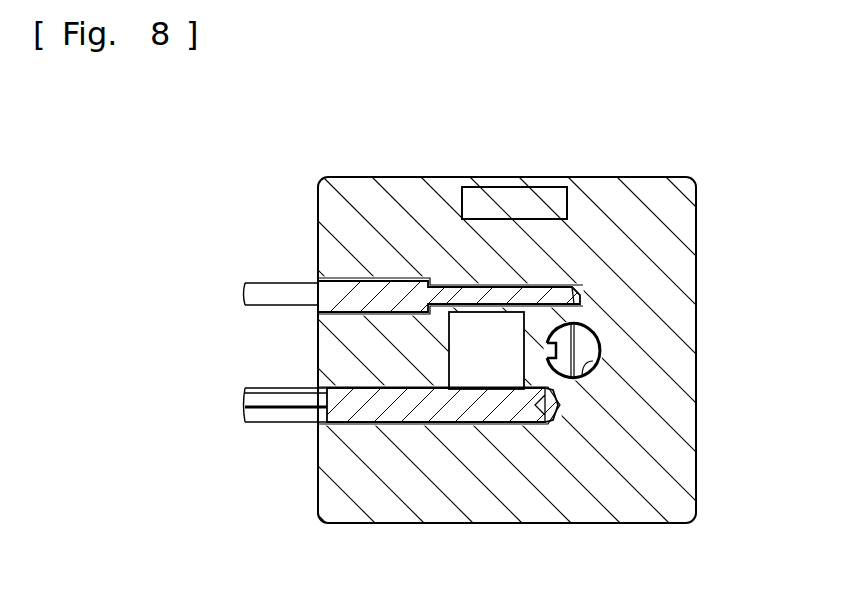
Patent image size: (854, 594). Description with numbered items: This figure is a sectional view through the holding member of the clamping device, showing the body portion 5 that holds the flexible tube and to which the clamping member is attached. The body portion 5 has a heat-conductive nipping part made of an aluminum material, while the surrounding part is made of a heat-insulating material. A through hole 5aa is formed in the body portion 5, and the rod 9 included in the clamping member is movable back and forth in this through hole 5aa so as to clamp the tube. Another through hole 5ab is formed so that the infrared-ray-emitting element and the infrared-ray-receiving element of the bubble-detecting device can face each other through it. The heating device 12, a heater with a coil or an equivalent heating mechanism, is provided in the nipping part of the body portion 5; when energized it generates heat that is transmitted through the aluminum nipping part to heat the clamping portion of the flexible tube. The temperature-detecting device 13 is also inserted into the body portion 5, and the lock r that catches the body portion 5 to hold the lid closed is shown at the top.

The body portion 5 is at (688, 467).
The through hole 5aa is at (601, 360).
The through hole 5ab is at (448, 352).
The rod 9 is at (592, 343).
The heating device 12 is at (513, 422).
The temperature-detecting device 13 is at (584, 290).
The lock r is at (536, 196).